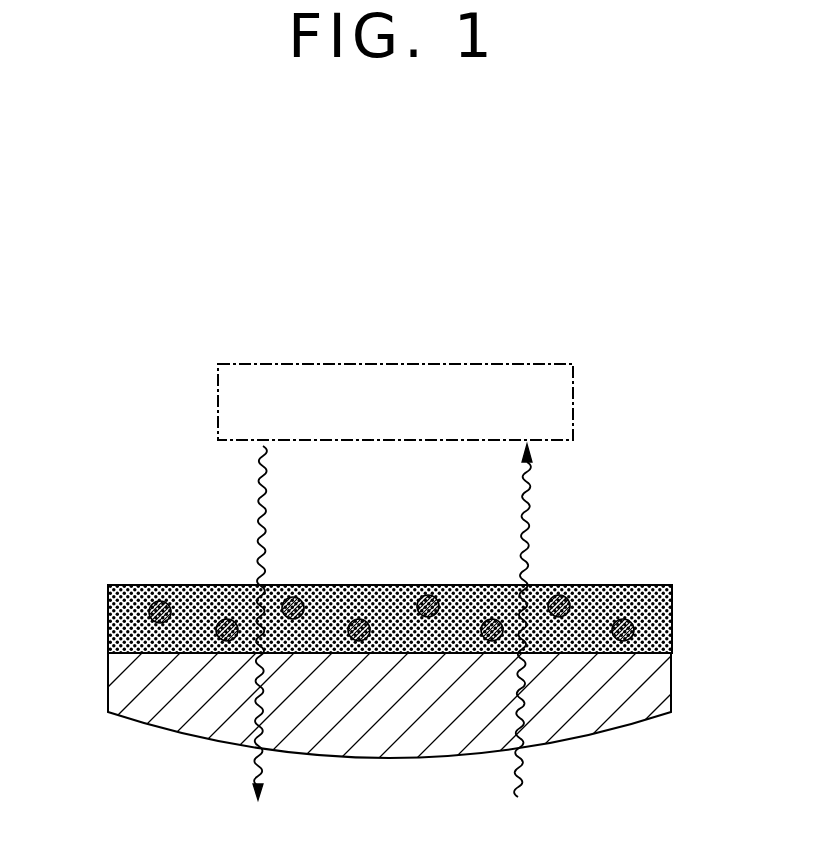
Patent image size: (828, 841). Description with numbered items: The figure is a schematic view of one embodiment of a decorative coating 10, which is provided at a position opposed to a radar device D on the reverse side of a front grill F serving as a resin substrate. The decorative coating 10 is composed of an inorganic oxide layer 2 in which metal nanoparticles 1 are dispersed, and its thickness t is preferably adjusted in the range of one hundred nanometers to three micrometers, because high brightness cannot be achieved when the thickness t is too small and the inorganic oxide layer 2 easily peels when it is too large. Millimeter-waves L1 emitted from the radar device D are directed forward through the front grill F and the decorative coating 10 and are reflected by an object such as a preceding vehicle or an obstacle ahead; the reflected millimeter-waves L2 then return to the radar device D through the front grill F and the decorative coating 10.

The metal nanoparticles 1 is at (294, 594).
The inorganic oxide layer 2 is at (672, 617).
The decorative coating 10 is at (380, 619).
The radar device D is at (573, 402).
The front grill F is at (120, 696).
The thickness t is at (67, 585).
The millimeter-waves L1 is at (252, 771).
The reflected millimeter-waves L2 is at (522, 772).